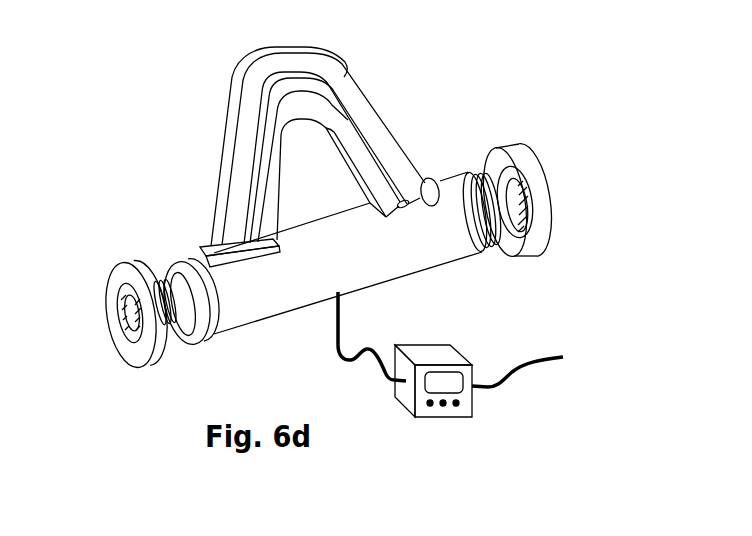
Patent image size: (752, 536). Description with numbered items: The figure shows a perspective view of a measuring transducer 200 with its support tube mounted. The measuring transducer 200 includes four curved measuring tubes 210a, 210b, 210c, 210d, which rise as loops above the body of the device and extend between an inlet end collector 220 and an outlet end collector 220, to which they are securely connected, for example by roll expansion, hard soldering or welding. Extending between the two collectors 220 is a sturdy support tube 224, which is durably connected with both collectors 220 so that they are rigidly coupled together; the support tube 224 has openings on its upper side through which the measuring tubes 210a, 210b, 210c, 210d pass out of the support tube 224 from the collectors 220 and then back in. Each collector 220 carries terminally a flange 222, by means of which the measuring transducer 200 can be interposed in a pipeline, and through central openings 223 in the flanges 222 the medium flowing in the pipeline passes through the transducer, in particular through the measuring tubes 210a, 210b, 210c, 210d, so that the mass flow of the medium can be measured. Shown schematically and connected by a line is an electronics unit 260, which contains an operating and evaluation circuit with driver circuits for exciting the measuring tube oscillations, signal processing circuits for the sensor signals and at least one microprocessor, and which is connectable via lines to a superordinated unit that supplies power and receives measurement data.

The measuring transducer 200 is at (405, 74).
The measuring tube 210a is at (232, 187).
The measuring tube 210b is at (227, 152).
The measuring tube 210c is at (272, 137).
The measuring tube 210d is at (272, 103).
The collector 220 is at (187, 258).
The flange 222 is at (127, 262).
The central opening 223 is at (123, 317).
The support tube 224 is at (392, 269).
The electronics unit 260 is at (407, 396).